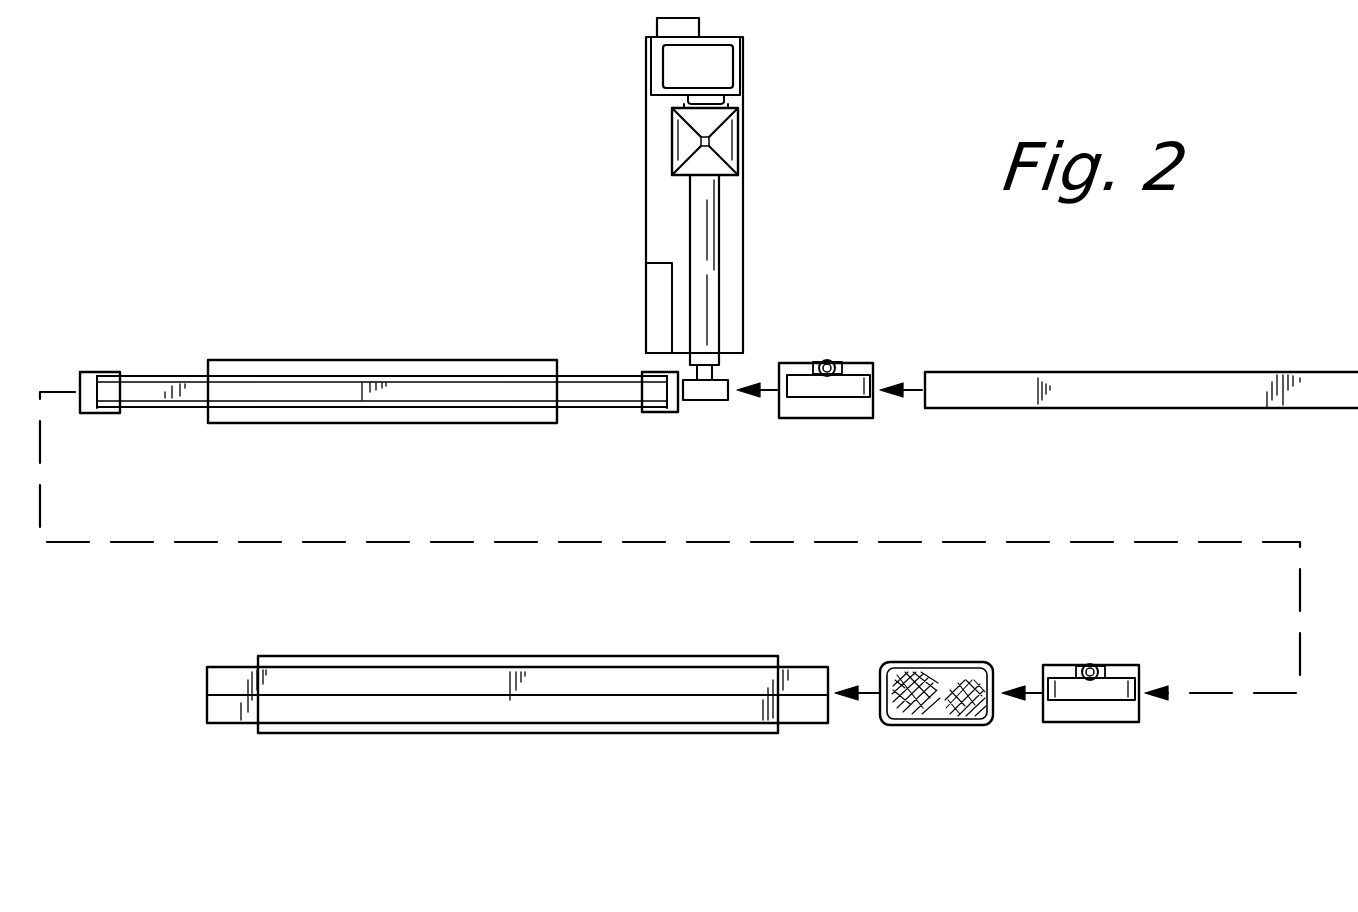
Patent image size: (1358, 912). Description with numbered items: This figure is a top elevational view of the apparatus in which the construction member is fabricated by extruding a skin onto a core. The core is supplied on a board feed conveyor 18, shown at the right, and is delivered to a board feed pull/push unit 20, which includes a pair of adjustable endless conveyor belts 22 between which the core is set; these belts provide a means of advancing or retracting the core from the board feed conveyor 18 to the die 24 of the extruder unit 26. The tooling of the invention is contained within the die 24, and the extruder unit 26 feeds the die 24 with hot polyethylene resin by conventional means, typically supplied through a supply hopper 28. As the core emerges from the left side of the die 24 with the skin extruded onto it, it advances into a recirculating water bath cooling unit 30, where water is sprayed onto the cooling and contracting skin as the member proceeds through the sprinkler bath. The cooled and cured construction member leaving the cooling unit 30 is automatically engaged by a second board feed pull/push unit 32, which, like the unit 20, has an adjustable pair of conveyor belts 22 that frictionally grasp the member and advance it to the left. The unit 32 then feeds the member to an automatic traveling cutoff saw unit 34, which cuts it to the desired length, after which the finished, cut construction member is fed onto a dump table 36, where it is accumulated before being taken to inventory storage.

The board feed conveyor 18 is at (1152, 366).
The board feed pull/push unit 20 is at (862, 354).
The adjustable endless conveyor belts 22 is at (868, 382).
The die 24 is at (712, 397).
The extruder unit 26 is at (748, 252).
The supply hopper 28 is at (725, 135).
The recirculating water bath cooling unit 30 is at (340, 383).
The board feed pull/push unit 32 is at (1097, 728).
The automatic traveling cutoff saw unit 34 is at (902, 738).
The dump table 36 is at (497, 728).